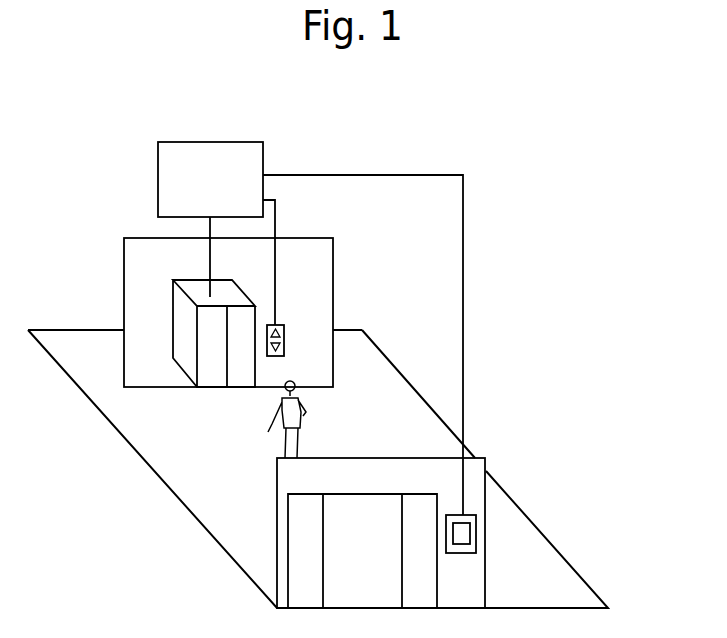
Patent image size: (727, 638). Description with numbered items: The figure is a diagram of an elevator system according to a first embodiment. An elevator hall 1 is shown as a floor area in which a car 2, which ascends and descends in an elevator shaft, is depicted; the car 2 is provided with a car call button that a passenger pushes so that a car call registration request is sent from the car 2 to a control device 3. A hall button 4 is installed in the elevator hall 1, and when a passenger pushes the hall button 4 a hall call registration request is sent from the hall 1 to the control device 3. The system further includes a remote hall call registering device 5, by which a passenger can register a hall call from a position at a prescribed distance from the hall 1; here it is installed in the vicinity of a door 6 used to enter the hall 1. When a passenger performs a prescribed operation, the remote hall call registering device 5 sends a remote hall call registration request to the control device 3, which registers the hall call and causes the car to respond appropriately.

The elevator hall 1 is at (200, 428).
The car 2 is at (192, 278).
The control device 3 is at (172, 142).
The hall button 4 is at (284, 339).
The remote hall call registering device 5 is at (466, 513).
The door 6 is at (277, 561).